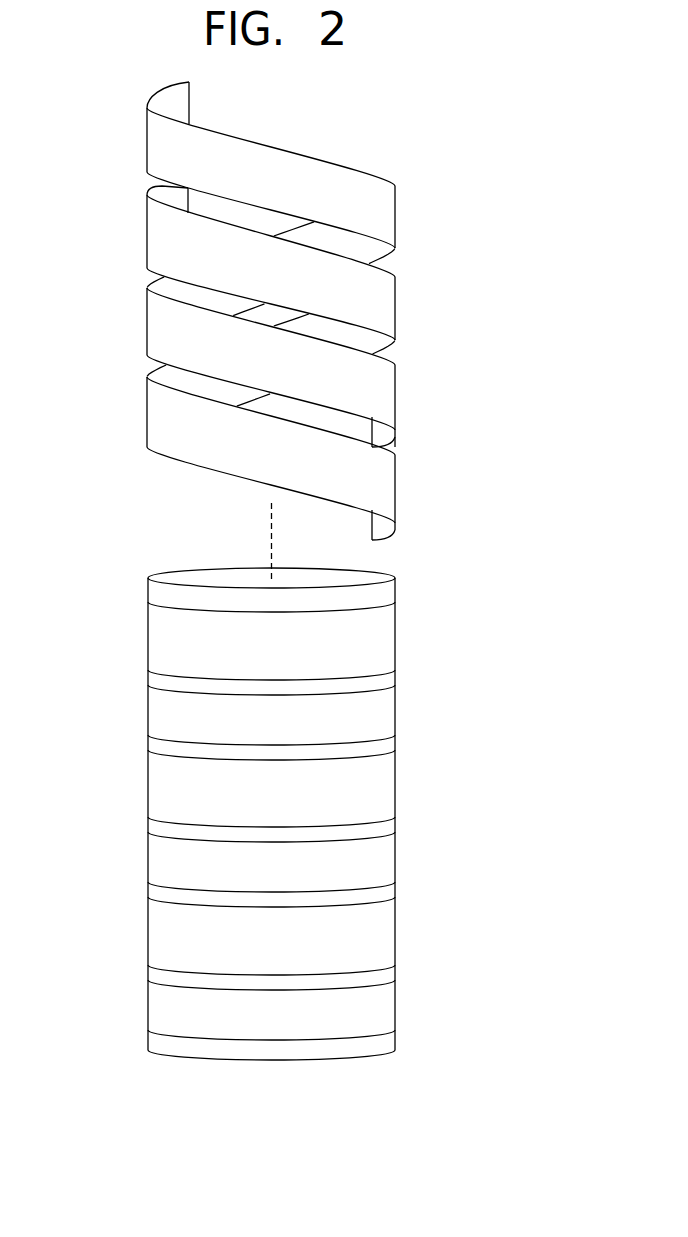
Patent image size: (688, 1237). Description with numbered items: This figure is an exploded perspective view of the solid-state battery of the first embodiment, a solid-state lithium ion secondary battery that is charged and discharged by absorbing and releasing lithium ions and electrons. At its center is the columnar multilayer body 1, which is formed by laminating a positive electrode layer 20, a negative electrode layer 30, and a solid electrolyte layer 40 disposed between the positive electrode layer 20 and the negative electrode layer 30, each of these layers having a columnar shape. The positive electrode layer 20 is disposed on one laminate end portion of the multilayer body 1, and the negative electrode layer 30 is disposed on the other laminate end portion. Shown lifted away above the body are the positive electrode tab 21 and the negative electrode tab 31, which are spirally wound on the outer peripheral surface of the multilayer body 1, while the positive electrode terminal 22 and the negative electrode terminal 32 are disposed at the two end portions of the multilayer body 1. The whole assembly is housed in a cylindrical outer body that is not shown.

The multilayer body 1 is at (518, 820).
The positive electrode layer 20 is at (395, 632).
The positive electrode tab 21 is at (395, 213).
The positive electrode terminal 22 is at (148, 592).
The negative electrode layer 30 is at (395, 715).
The negative electrode tab 31 is at (395, 303).
The negative electrode terminal 32 is at (148, 1040).
The solid electrolyte layer 40 is at (395, 677).